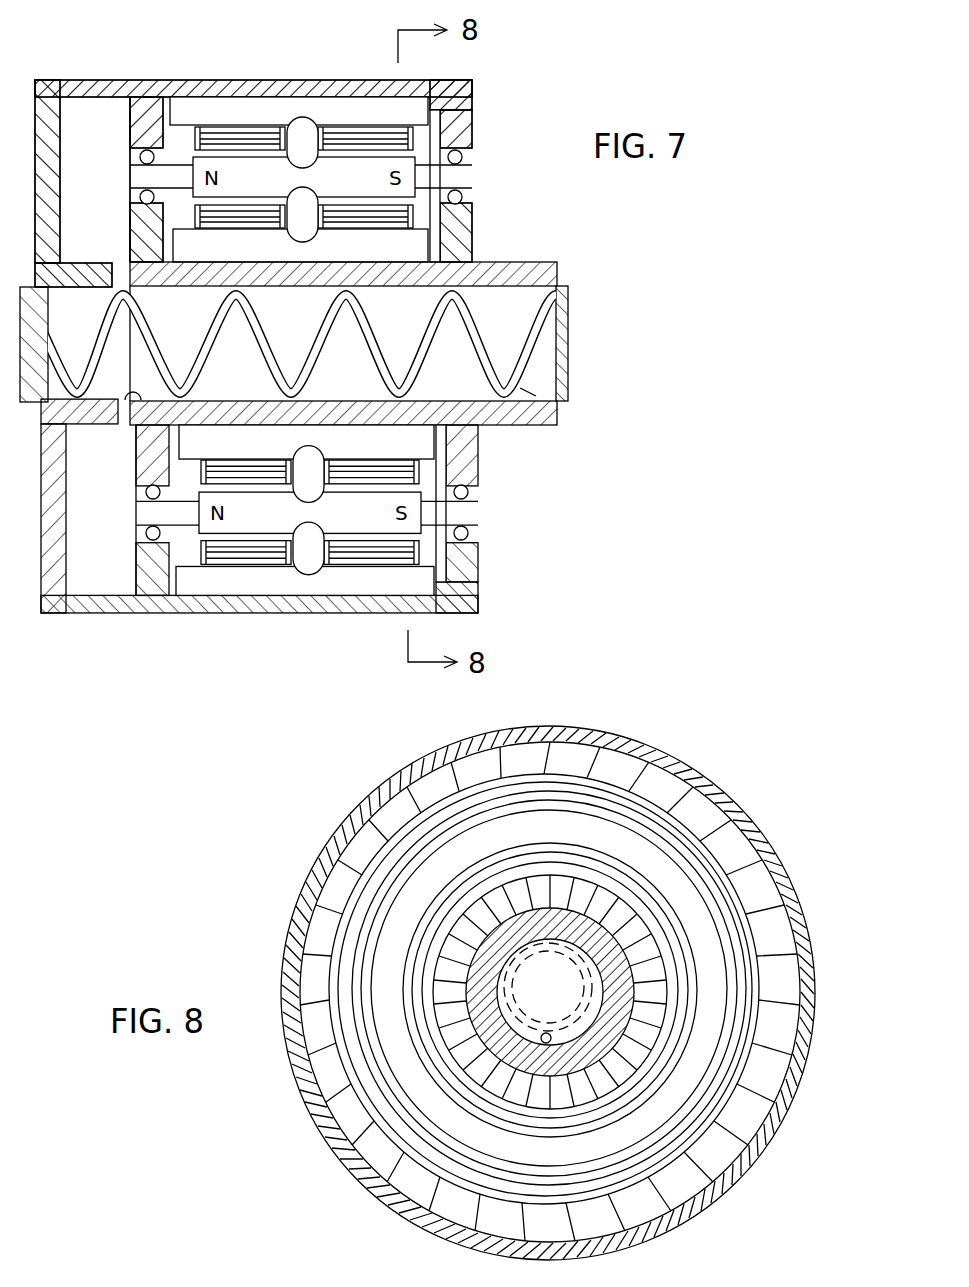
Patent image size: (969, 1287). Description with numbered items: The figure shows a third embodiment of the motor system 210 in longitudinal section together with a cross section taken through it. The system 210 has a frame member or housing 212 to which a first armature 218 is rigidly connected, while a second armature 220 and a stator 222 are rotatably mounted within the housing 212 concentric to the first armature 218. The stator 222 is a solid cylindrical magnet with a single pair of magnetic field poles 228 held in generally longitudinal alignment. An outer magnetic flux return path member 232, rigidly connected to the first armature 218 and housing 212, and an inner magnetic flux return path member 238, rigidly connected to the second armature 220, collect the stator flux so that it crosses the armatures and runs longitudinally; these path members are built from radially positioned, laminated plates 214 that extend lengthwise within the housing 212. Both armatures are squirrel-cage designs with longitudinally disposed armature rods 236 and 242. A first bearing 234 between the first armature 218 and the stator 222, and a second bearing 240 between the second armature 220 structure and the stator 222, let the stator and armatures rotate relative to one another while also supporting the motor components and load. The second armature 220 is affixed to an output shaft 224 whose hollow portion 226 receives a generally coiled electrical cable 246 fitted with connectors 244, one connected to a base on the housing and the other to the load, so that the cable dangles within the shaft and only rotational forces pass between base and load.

In FIG. 7, the third embodiment motor system 210 is at (519, 85).
In FIG. 7, the housing 212 is at (200, 80).
In FIG. 8, the housing 212 is at (353, 812).
In FIG. 8, the radially positioned plates 214 is at (644, 785).
In FIG. 7, the first armature 218 is at (432, 143).
In FIG. 8, the first armature 218 is at (369, 849).
In FIG. 7, the second armature 220 is at (432, 220).
In FIG. 8, the second armature 220 is at (474, 1107).
In FIG. 7, the stator 222 is at (435, 183).
In FIG. 8, the stator 222 is at (719, 984).
In FIG. 7, the output shaft 224 is at (575, 276).
In FIG. 8, the output shaft 224 is at (612, 955).
In FIG. 7, the hollow portion 226 is at (127, 398).
In FIG. 8, the hollow portion 226 is at (567, 1042).
In FIG. 7, the magnetic field poles 228 is at (195, 176).
In FIG. 7, the outer magnetic flux return path member 232 is at (276, 112).
In FIG. 8, the outer magnetic flux return path member 232 is at (371, 1147).
In FIG. 7, the first bearing 234 is at (130, 144).
In FIG. 7, the armature rods 236 is at (203, 540).
In FIG. 7, the inner magnetic flux return path member 238 is at (192, 249).
In FIG. 8, the inner magnetic flux return path member 238 is at (438, 1069).
In FIG. 7, the second bearing 240 is at (123, 208).
In FIG. 7, the armature rods 242 is at (201, 462).
In FIG. 7, the connectors 244 is at (48, 330).
In FIG. 7, the electrical cable 246 is at (537, 400).
In FIG. 8, the electrical cable 246 is at (541, 1038).